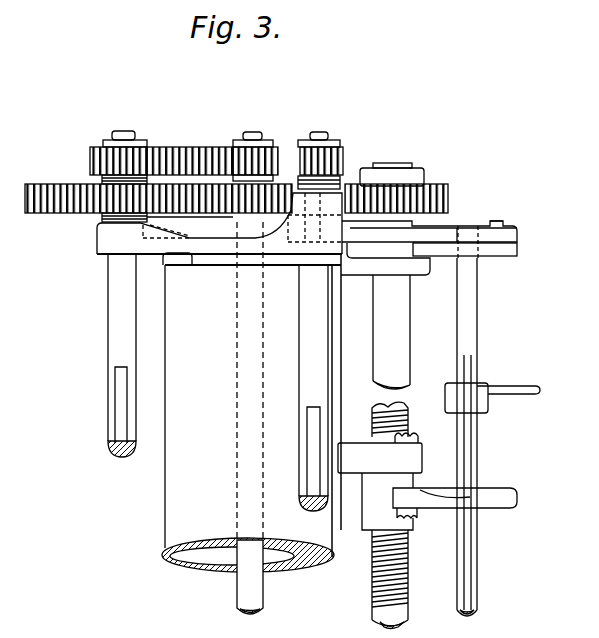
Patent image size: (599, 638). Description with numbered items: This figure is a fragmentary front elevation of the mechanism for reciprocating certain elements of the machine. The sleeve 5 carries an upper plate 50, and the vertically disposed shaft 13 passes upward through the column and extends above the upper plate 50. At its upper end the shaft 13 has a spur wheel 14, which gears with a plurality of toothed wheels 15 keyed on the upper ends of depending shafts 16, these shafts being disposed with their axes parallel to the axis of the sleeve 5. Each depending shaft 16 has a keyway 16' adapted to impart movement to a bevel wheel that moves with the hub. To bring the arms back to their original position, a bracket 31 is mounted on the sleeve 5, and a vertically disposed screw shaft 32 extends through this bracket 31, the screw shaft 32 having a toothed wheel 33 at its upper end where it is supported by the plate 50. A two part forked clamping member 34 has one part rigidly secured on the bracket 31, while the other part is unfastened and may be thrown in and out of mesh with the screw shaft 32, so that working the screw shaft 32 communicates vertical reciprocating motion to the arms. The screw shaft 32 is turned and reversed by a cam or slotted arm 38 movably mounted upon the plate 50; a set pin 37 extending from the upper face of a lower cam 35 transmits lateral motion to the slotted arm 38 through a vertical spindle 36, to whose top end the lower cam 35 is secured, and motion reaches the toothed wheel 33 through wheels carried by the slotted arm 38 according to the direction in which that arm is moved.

The sleeve 5 is at (182, 570).
The vertically disposed shaft 13 is at (238, 588).
The spur wheel 14 is at (240, 192).
The toothed wheels 15 is at (97, 152).
The depending shafts 16 is at (205, 395).
The keyway 16' is at (189, 431).
The bracket 31 is at (415, 463).
The screw shaft 32 is at (405, 403).
The toothed wheel 33 is at (446, 200).
The two part forked clamping member 34 is at (507, 508).
The lower cam 35 is at (502, 248).
The vertical spindle 36 is at (470, 333).
The set pin 37 is at (500, 222).
The slotted arm 38 is at (512, 233).
The upper plate 50 is at (215, 258).